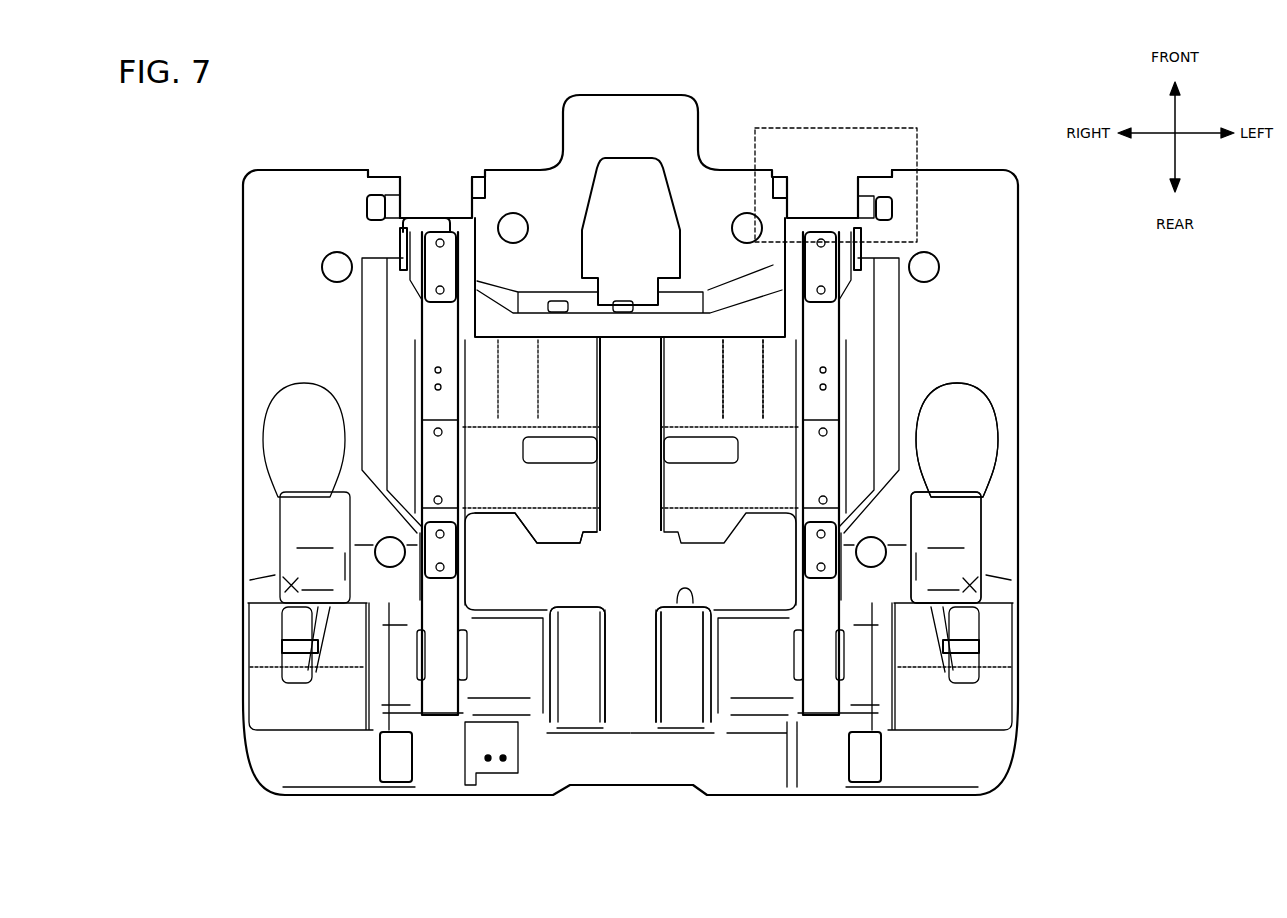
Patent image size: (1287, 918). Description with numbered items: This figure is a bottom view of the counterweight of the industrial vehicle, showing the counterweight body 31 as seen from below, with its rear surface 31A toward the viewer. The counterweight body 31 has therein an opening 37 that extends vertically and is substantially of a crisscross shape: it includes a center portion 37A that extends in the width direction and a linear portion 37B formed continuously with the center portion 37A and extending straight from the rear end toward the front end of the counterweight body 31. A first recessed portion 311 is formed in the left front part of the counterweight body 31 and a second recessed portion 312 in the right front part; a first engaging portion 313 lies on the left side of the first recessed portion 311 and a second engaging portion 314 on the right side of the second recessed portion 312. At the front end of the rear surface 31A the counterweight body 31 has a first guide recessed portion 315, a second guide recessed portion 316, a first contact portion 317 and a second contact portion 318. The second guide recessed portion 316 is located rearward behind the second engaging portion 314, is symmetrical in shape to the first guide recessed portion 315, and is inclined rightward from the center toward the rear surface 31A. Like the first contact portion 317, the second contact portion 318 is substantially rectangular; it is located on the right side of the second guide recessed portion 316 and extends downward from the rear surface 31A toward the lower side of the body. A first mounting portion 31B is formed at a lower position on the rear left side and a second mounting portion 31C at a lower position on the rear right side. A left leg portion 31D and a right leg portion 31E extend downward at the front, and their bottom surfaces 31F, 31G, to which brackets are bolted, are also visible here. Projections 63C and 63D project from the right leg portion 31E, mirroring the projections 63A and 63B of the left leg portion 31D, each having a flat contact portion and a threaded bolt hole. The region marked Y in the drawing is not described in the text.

The counterweight body 31 is at (1022, 478).
The rear surface 31A is at (975, 387).
The first mounting portion 31B is at (840, 648).
The second mounting portion 31C is at (418, 655).
The left leg portion 31D is at (873, 283).
The right leg portion 31E is at (360, 318).
The bottom surface of the left leg portion 31F is at (765, 330).
The bottom surface of the right leg portion 31G is at (440, 264).
The opening 37 is at (639, 582).
The center portion 37A is at (678, 605).
The linear portion 37B is at (605, 500).
The first recessed portion 311 is at (788, 188).
The second recessed portion 312 is at (472, 205).
The first engaging portion 313 is at (880, 185).
The second engaging portion 314 is at (390, 185).
The first guide recessed portion 315 is at (866, 208).
The second guide recessed portion 316 is at (410, 218).
The first contact portion 317 is at (893, 208).
The second contact portion 318 is at (375, 208).
The projection 63A is at (858, 270).
The projection 63B is at (845, 266).
The projection 63C is at (403, 232).
The projection 63D is at (336, 266).
The region Y is at (912, 128).